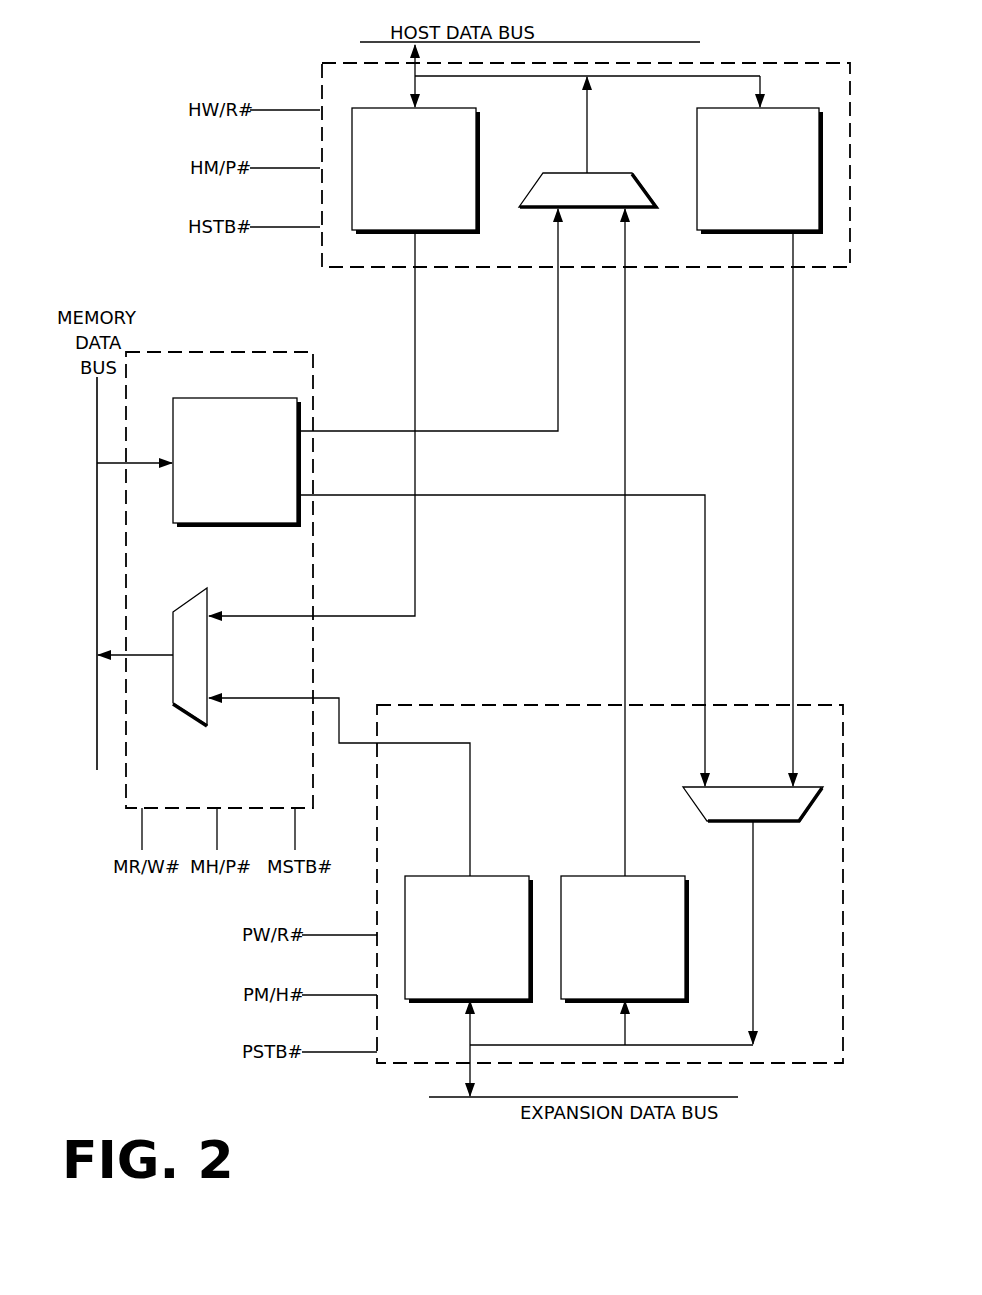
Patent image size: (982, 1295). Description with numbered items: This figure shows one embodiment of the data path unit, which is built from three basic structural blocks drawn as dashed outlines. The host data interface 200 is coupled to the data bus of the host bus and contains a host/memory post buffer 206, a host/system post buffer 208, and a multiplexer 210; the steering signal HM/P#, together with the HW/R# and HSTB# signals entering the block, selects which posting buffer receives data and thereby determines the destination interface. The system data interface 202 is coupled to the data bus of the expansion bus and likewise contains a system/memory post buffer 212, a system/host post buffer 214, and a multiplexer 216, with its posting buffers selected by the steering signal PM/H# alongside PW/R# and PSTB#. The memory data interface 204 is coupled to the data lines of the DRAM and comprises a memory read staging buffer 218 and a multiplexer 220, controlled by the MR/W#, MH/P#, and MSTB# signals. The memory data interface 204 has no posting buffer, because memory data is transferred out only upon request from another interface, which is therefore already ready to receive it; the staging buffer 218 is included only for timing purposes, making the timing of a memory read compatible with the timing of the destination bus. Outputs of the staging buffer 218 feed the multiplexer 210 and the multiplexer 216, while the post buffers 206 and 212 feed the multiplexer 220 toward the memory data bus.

The host data interface 200 is at (840, 265).
The system data interface 202 is at (837, 1051).
The memory data interface 204 is at (300, 805).
The host/memory post buffer 206 is at (463, 223).
The host/system post buffer 208 is at (807, 223).
The multiplexer 210 is at (633, 201).
The system/memory post buffer 212 is at (515, 991).
The system/host post buffer 214 is at (670, 991).
The multiplexer 216 is at (795, 815).
The memory read staging buffer 218 is at (282, 515).
The multiplexer 220 is at (190, 703).